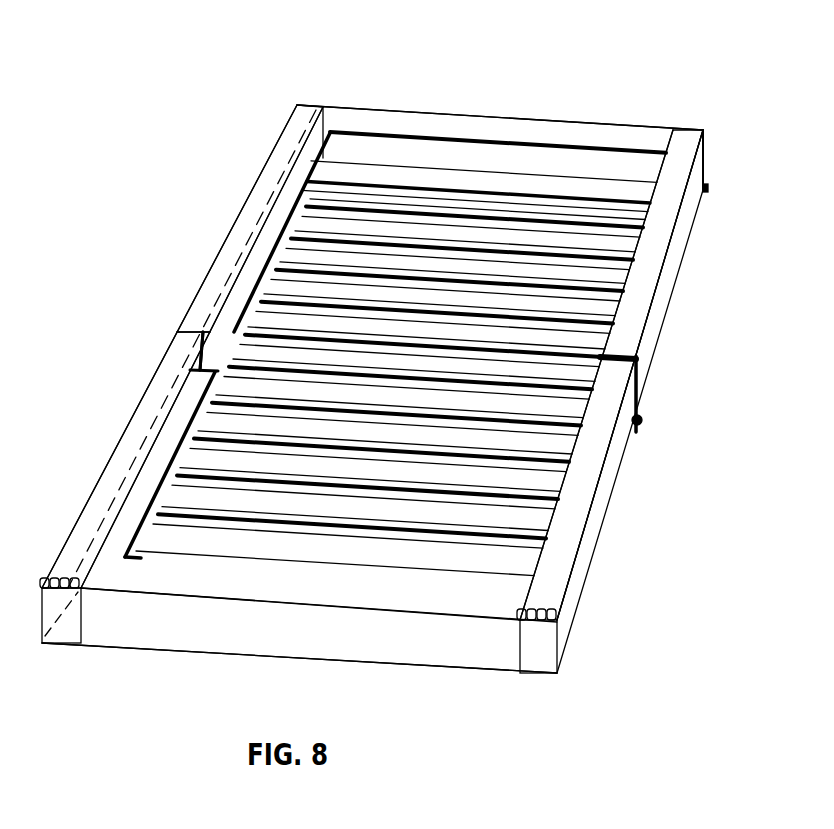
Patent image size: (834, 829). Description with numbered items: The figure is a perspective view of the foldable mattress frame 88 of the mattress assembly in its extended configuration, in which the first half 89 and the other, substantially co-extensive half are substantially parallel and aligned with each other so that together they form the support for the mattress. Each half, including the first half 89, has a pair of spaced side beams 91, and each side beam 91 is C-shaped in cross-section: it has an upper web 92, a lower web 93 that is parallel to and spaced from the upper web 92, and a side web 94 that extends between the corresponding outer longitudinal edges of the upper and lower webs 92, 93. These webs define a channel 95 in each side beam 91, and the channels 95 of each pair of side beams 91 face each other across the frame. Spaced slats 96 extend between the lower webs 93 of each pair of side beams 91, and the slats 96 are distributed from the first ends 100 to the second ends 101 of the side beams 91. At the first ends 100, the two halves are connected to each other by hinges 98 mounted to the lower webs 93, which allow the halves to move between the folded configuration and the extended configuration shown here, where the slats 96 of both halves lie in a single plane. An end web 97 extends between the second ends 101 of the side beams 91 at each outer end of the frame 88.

The foldable mattress frame 88 is at (662, 112).
The first half 89 is at (593, 625).
The side beam 91 is at (213, 248).
The upper web 92 is at (289, 137).
The lower web 93 is at (320, 163).
The side web 94 is at (266, 212).
The channel 95 is at (230, 327).
The slat 96 is at (400, 197).
The end web 97 is at (573, 160).
The hinge 98 is at (203, 367).
The first end 100 is at (637, 363).
The second end 101 is at (705, 160).